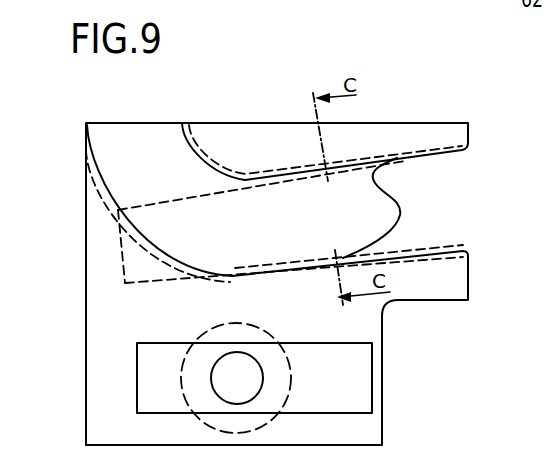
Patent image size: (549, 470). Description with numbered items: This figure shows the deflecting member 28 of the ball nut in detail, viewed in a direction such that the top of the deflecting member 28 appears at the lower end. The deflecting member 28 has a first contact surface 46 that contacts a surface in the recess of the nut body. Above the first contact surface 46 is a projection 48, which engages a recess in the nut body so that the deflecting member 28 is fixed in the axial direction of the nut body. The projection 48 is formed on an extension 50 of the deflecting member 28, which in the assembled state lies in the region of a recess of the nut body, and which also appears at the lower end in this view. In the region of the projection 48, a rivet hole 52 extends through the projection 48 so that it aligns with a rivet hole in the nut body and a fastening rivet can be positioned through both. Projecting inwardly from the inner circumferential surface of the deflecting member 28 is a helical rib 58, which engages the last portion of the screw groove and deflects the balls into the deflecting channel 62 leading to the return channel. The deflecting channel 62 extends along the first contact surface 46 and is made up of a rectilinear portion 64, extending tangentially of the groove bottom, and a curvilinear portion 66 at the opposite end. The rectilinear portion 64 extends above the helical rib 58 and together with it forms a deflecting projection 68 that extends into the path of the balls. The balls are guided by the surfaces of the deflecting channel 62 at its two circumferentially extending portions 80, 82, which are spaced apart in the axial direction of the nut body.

The deflecting member 28 is at (86, 308).
The first contact surface 46 is at (160, 318).
The projection 48 is at (367, 389).
The extension 50 is at (373, 329).
The rivet hole 52 is at (253, 378).
The helical rib 58 is at (125, 251).
The deflecting channel 62 is at (257, 222).
The rectilinear portion 64 is at (348, 196).
The curvilinear portion 66 is at (135, 140).
The deflecting projection 68 is at (398, 208).
The circumferentially extending portion 80 is at (297, 170).
The circumferentially extending portion 82 is at (283, 276).